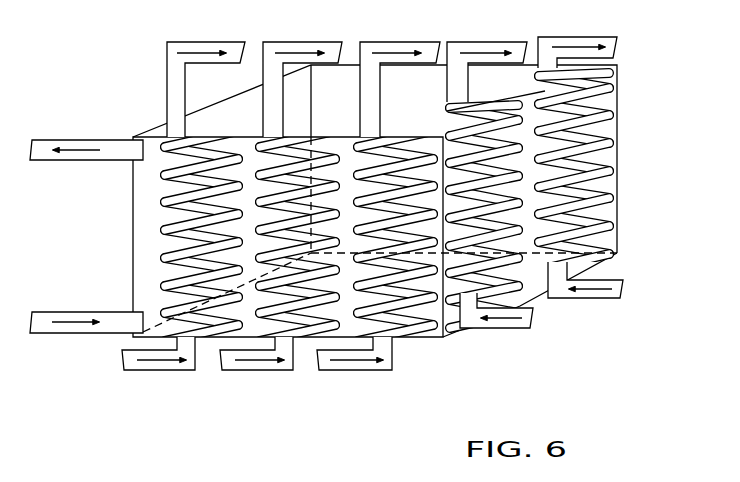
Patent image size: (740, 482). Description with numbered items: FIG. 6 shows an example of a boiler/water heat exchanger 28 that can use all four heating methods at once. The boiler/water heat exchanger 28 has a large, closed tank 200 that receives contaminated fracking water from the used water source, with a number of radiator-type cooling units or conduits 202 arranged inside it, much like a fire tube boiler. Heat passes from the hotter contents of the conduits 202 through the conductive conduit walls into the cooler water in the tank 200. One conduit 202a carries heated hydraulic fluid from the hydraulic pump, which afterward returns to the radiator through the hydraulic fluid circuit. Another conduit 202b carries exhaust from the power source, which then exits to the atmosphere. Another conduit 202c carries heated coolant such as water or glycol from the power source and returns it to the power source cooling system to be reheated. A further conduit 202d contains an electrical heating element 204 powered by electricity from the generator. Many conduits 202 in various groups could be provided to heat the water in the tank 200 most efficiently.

The boiler/water heat exchanger 28 is at (358, 223).
The tank 200 is at (131, 213).
The conduit 202 is at (607, 177).
The conduit 202a is at (165, 240).
The conduit 202b is at (306, 337).
The conduit 202c is at (414, 337).
The conduit 202d is at (527, 295).
The electrical heating element 204 is at (447, 83).